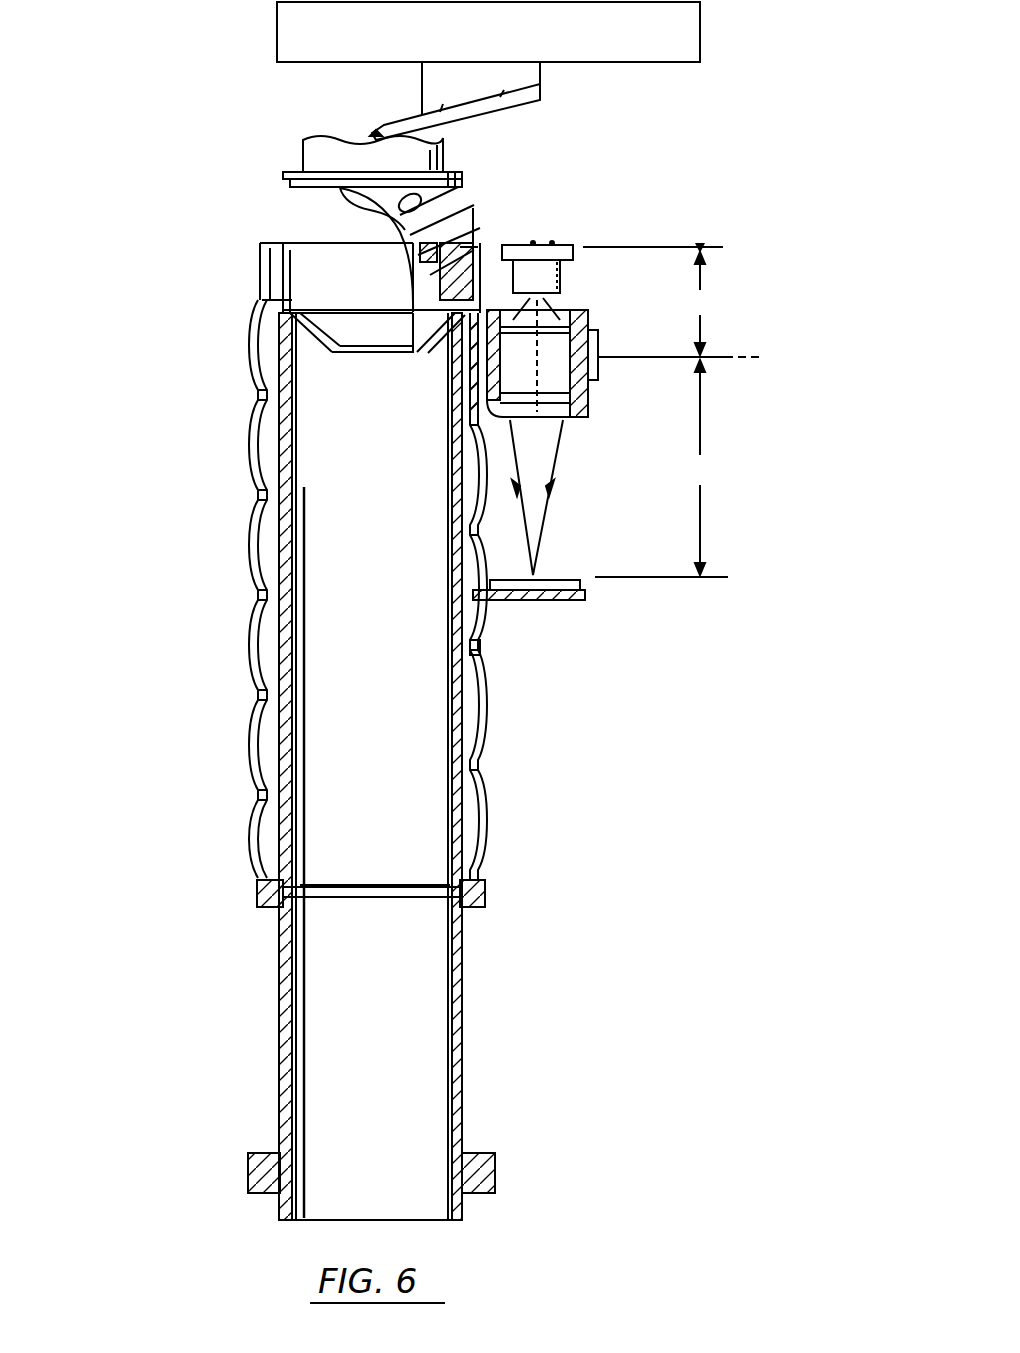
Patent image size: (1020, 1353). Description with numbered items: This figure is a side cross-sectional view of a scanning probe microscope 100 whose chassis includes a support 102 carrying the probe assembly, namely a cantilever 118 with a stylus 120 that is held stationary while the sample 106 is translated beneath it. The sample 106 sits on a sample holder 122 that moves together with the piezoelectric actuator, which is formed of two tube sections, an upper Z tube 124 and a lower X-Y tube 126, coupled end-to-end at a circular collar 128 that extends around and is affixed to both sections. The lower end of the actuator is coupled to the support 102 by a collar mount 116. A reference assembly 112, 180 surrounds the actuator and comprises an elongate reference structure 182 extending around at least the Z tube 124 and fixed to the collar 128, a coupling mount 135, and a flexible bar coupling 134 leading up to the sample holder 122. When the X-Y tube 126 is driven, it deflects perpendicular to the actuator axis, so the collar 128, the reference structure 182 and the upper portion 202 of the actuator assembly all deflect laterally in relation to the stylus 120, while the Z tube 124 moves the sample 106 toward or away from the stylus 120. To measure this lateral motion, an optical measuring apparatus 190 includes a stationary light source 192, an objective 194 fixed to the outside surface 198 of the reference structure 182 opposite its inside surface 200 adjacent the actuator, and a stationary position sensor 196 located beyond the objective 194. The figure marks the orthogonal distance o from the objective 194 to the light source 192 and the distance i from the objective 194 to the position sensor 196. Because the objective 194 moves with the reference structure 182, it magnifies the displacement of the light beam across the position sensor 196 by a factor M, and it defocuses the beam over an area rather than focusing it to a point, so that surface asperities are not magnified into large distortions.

The scanning probe microscope 100 is at (205, 70).
The support 102 is at (700, 28).
The sample 106 is at (424, 141).
The reference assembly 112 is at (262, 252).
The collar mount 116 is at (496, 1172).
The cantilever 118 is at (397, 120).
The stylus 120 is at (384, 135).
The sample holder 122 is at (293, 172).
The Z tube 124 is at (473, 745).
The X-Y tube 126 is at (470, 1025).
The circular collar 128 is at (265, 905).
The flexible bar coupling 134 is at (407, 320).
The coupling mount 135 is at (331, 356).
The reference assembly 180 is at (505, 200).
The reference structure 182 is at (260, 782).
The optical measuring apparatus 190 is at (618, 403).
The light source 192 is at (580, 233).
The objective 194 is at (572, 416).
The position sensor 196 is at (585, 595).
The outside surface 198 is at (481, 677).
The inside surface 200 is at (482, 652).
The upper portion 202 is at (310, 237).